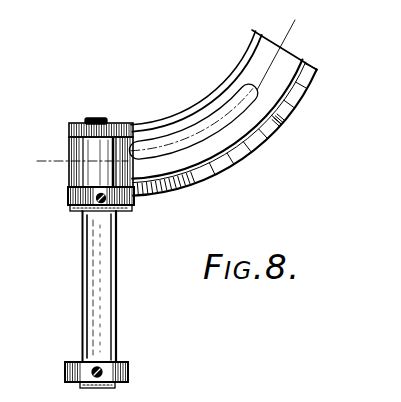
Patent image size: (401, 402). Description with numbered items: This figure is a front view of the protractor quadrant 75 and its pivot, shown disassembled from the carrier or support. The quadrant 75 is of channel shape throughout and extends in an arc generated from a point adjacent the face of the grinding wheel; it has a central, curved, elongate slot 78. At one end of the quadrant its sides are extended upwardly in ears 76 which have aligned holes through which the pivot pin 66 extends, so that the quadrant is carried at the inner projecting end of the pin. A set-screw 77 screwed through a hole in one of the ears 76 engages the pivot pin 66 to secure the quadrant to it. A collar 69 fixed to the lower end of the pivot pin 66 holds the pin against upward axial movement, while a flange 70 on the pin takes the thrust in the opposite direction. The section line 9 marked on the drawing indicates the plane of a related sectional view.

The section line 9- 9 is at (44, 161).
The pivot pin 66 is at (112, 308).
The collar 69 is at (128, 373).
The flange 70 is at (124, 217).
The protractor quadrant 75 is at (258, 135).
The ears 76 is at (68, 131).
The set-screw 77 is at (93, 215).
The elongate slot 78 is at (192, 129).